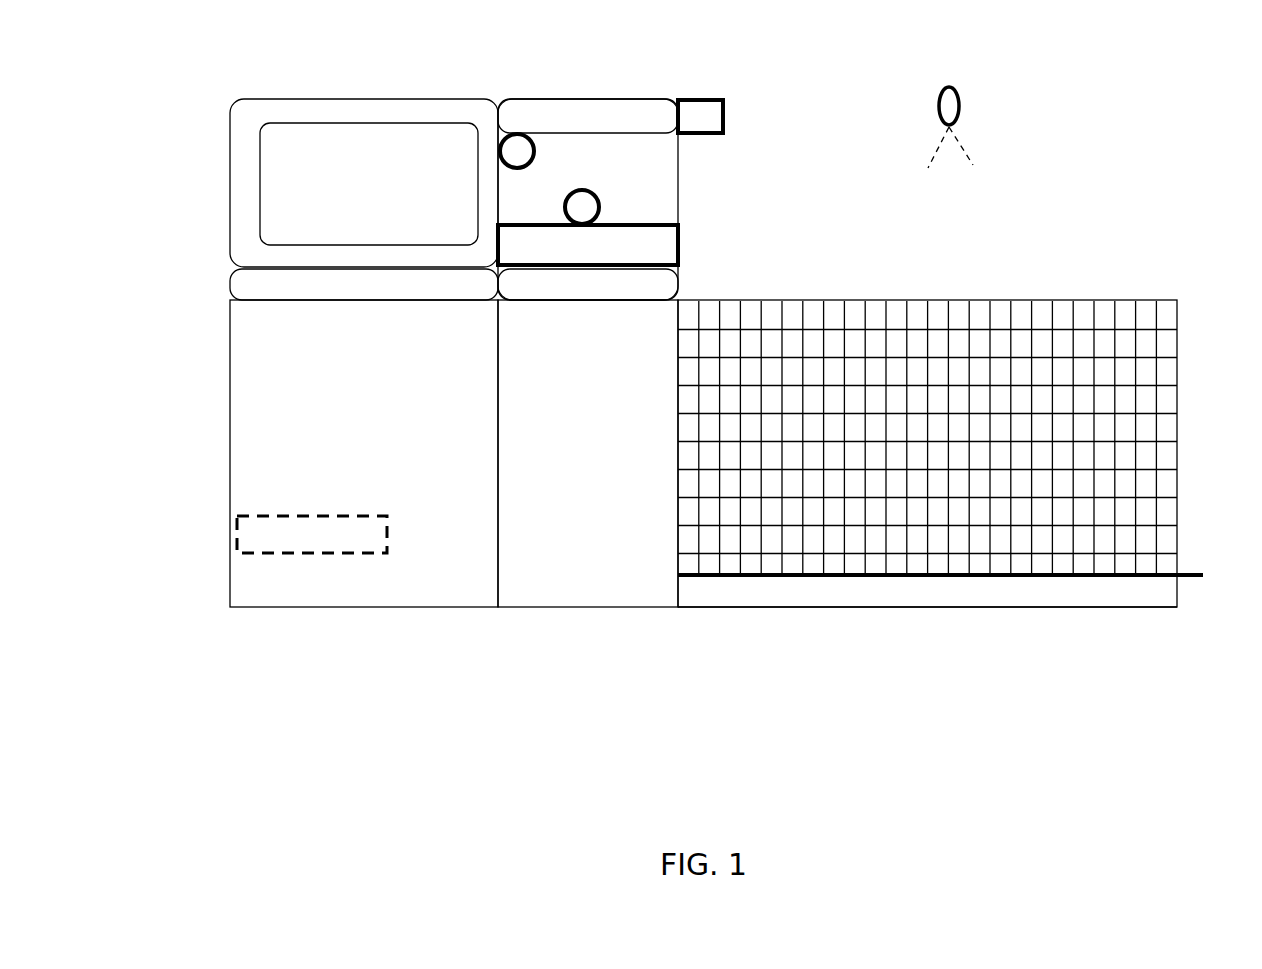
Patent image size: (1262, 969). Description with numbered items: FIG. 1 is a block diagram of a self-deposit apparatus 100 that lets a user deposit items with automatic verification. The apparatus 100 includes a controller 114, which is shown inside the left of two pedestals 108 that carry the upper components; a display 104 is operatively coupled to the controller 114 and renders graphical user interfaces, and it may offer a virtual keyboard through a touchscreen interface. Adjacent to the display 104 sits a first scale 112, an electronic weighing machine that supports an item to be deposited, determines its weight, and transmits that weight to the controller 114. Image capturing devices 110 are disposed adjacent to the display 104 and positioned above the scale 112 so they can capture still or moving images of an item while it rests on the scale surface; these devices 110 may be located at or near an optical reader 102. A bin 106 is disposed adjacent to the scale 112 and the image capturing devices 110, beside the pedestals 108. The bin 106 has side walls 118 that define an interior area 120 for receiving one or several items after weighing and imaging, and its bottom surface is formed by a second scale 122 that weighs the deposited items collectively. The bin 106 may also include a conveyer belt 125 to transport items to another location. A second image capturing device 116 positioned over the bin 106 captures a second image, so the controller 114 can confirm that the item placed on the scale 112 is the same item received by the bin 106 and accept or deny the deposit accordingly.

The self-deposit apparatus 100 is at (1040, 170).
The optical reader 102 is at (723, 118).
The display 104 is at (376, 99).
The bin 106 is at (788, 607).
The pedestal 108 is at (385, 607).
The image capturing devices 110 is at (530, 135).
The scale 112 is at (678, 246).
The controller 114 is at (253, 555).
The second image capturing device 116 is at (938, 103).
The side walls 118 is at (1157, 298).
The interior area 120 is at (905, 352).
The second scale 122 is at (960, 607).
The conveyer belt 125 is at (1203, 578).